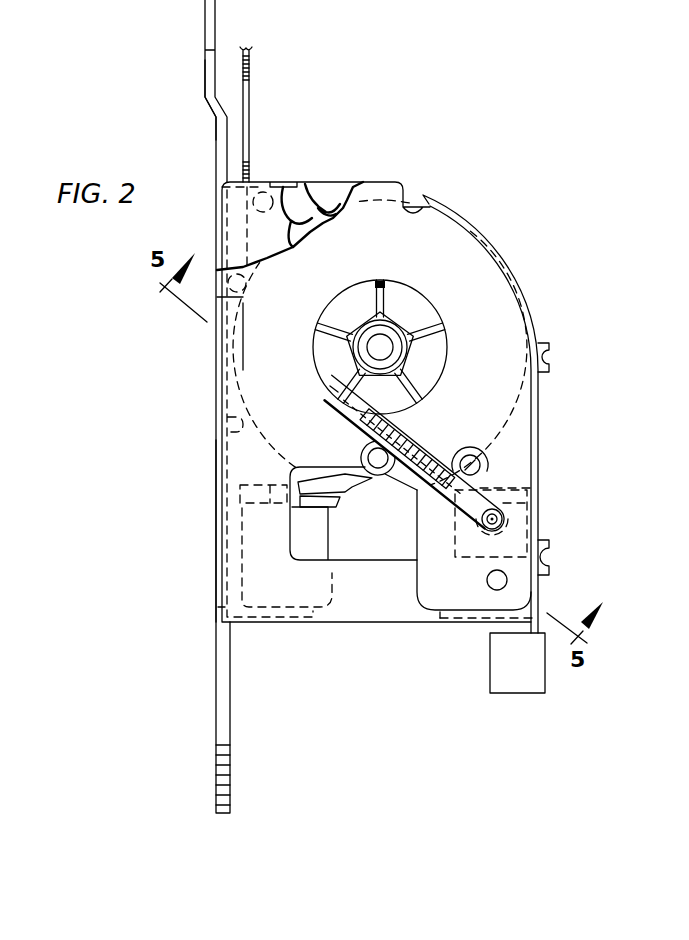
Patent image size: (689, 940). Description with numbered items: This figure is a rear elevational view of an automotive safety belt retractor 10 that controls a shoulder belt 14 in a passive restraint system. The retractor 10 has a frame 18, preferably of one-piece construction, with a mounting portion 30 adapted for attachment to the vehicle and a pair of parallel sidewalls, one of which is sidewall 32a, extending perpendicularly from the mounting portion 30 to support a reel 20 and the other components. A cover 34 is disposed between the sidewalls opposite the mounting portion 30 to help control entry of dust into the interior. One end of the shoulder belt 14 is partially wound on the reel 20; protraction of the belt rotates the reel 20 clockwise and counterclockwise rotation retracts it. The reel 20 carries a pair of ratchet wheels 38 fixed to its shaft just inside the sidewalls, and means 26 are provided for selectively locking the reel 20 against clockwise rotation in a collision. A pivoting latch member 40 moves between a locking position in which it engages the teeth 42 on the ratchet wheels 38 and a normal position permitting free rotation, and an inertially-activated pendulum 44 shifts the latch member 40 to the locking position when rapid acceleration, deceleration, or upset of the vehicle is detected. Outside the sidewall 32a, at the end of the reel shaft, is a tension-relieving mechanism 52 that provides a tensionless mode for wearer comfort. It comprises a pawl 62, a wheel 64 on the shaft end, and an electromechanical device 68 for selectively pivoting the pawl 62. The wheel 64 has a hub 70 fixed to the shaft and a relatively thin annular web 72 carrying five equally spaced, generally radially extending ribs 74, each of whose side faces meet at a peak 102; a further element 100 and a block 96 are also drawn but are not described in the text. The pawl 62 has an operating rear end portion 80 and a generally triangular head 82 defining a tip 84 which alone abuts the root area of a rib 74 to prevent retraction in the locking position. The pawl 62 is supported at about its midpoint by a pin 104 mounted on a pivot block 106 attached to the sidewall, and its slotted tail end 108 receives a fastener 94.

The automotive safety belt retractor 10 is at (409, 377).
The shoulder belt 14 is at (252, 68).
The frame 18 is at (203, 582).
The reel 20 is at (540, 420).
The means for selectively locking the reel 26 is at (203, 537).
The mounting portion 30 is at (217, 138).
The sidewall 32a is at (380, 185).
The cover 34 is at (538, 403).
The ratchet wheels 38 is at (322, 213).
The pivoting latch member 40 is at (343, 500).
The teeth 42 is at (290, 182).
The inertially-activated pendulum 44 is at (320, 546).
The tension-relieving mechanism 52 is at (426, 326).
The pawl 62 is at (458, 457).
The wheel 64 is at (386, 326).
The electromechanical device 68 is at (503, 503).
The hub 70 is at (357, 327).
The annular web 72 is at (327, 343).
The projections 74 is at (380, 283).
The operating rear end portion 80 is at (458, 520).
The head 82 is at (327, 367).
The tip 84 is at (343, 397).
The fastener 94 is at (510, 531).
The block 96 is at (490, 668).
The spoke 100 is at (420, 327).
The peak 102 is at (437, 333).
The pin 104 is at (437, 440).
The pivot block 106 is at (440, 455).
The tail end 108 is at (480, 488).